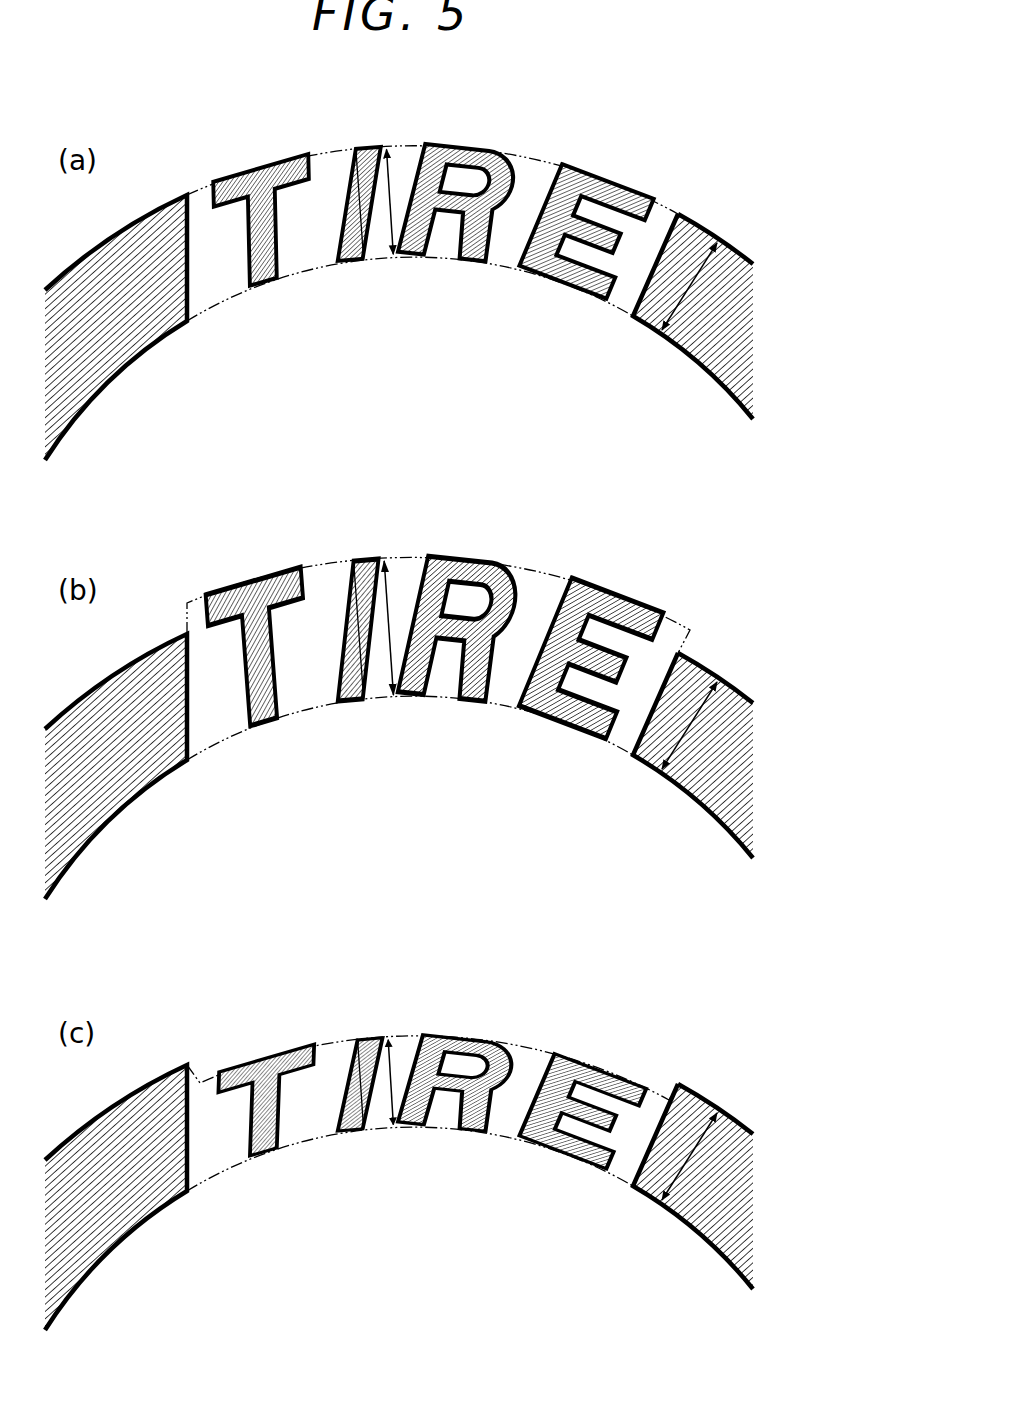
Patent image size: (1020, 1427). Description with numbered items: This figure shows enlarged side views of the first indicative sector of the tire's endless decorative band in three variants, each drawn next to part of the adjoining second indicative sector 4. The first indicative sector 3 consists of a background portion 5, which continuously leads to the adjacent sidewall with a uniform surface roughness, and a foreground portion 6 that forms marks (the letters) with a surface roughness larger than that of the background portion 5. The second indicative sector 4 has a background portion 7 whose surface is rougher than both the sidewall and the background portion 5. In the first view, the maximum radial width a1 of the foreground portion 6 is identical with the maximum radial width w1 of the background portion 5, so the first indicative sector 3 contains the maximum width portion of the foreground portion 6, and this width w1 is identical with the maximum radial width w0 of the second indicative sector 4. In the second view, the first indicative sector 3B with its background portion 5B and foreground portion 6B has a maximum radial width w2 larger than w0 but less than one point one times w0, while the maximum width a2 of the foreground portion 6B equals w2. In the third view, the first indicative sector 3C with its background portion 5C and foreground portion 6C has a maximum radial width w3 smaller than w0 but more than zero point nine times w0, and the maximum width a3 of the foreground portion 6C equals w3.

The first indicative sector 3 is at (419, 179).
The first indicative sector 3B is at (420, 607).
The first indicative sector 3C is at (418, 1051).
The second indicative sector 4 is at (693, 204).
The background portion 5 is at (526, 178).
The background portion 5B is at (542, 590).
The background portion 5C is at (525, 1065).
The foreground portion 6 is at (571, 178).
The foreground portion 6B is at (591, 583).
The foreground portion 6C is at (563, 1072).
The background portion 7 is at (742, 262).
The maximum radial width of the second indicative sector w0 is at (690, 290).
The maximum radial width of the background portion w1 is at (392, 190).
The maximum radial width of the first indicative sector w2 is at (399, 614).
The maximum radial width of the first indicative sector w3 is at (389, 1068).
The maximum radial width of the foreground portion a1 is at (343, 212).
The maximum width of the foreground portion a2 is at (347, 638).
The maximum width of the foreground portion a3 is at (344, 1098).